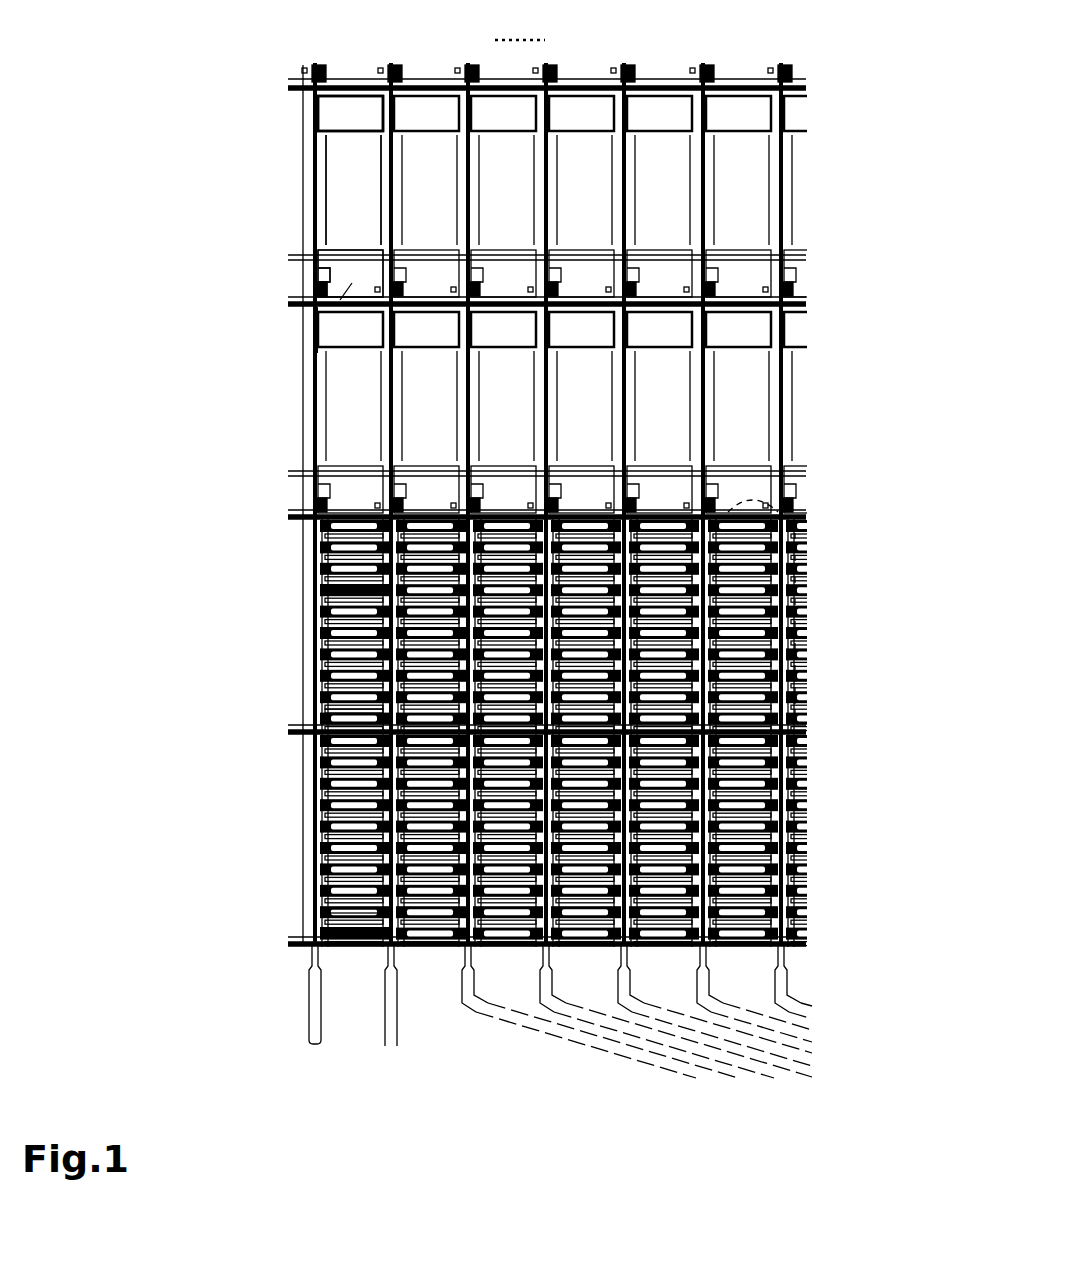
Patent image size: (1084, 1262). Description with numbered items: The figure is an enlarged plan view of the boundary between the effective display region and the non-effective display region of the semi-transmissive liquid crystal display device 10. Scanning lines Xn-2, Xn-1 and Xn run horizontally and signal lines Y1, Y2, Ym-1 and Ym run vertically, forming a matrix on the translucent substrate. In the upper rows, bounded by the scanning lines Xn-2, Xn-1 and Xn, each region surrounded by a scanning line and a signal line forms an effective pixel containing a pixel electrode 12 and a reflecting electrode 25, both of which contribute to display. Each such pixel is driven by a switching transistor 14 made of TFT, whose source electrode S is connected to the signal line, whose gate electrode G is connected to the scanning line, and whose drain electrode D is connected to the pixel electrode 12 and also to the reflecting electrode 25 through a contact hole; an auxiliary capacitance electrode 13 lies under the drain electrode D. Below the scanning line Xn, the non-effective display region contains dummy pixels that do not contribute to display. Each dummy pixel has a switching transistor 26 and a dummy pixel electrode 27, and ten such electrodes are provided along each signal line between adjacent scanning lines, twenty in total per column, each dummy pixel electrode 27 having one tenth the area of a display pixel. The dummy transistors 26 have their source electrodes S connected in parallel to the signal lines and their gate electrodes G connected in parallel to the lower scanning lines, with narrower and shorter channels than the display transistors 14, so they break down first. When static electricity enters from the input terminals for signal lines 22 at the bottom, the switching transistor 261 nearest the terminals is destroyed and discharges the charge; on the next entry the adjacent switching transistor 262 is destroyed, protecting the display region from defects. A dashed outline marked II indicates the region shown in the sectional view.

The semi-transmissive liquid crystal display device 10 is at (247, 27).
The pixel electrode 12 is at (350, 172).
The auxiliary capacitance electrode 13 is at (334, 262).
The switching transistor 14 is at (316, 322).
The input terminals for signal lines 22 is at (318, 1006).
The reflecting electrode 25 is at (332, 113).
The switching transistor of dummy pixel 26 is at (318, 714).
The switching transistor 261 is at (318, 940).
The switching transistor 262 is at (318, 912).
The dummy pixel electrode 27 is at (352, 593).
The source electrode S is at (316, 291).
The gate electrode G is at (316, 306).
The drain electrode D is at (326, 345).
The signal line Y1 is at (318, 66).
The signal line Y2 is at (394, 66).
The signal line Ym-1 is at (706, 66).
The signal line Ym is at (784, 66).
The scanning line Xn-2 is at (806, 92).
The scanning line Xn-1 is at (806, 307).
The scanning line Xn is at (806, 516).
The section II region II is at (806, 549).